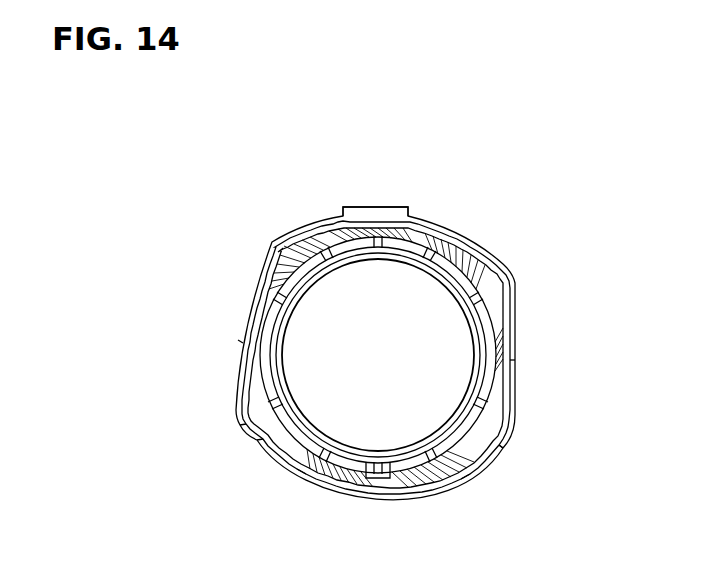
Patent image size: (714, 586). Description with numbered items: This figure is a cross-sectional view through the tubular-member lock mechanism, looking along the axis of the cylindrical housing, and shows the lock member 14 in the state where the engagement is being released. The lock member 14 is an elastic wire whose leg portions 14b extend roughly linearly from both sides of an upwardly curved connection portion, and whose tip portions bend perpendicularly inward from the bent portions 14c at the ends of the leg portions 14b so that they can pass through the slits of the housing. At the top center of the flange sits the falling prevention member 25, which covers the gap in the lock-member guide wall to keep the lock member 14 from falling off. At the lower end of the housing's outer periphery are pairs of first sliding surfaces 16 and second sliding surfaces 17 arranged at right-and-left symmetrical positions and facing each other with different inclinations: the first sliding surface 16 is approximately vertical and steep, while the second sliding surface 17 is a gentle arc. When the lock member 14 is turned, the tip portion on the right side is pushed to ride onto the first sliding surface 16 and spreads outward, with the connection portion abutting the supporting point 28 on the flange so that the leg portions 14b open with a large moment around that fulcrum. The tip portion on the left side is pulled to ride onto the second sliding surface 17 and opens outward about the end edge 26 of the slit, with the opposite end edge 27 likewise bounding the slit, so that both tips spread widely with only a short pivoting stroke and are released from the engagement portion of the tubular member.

The lock member 14 is at (302, 222).
The leg portions 14b is at (243, 340).
The bent portions 14c is at (240, 426).
The first sliding surfaces 16 is at (297, 477).
The second sliding surfaces 17 is at (258, 446).
The falling prevention member 25 is at (377, 207).
The end edge 26 is at (268, 268).
The end edge 27 is at (492, 270).
The supporting point 28 is at (440, 230).